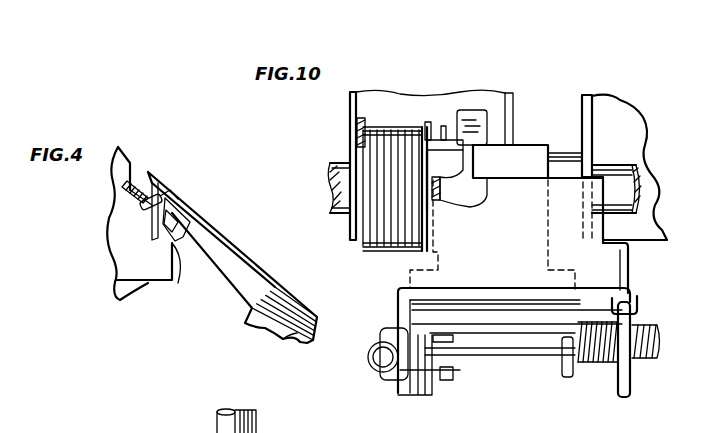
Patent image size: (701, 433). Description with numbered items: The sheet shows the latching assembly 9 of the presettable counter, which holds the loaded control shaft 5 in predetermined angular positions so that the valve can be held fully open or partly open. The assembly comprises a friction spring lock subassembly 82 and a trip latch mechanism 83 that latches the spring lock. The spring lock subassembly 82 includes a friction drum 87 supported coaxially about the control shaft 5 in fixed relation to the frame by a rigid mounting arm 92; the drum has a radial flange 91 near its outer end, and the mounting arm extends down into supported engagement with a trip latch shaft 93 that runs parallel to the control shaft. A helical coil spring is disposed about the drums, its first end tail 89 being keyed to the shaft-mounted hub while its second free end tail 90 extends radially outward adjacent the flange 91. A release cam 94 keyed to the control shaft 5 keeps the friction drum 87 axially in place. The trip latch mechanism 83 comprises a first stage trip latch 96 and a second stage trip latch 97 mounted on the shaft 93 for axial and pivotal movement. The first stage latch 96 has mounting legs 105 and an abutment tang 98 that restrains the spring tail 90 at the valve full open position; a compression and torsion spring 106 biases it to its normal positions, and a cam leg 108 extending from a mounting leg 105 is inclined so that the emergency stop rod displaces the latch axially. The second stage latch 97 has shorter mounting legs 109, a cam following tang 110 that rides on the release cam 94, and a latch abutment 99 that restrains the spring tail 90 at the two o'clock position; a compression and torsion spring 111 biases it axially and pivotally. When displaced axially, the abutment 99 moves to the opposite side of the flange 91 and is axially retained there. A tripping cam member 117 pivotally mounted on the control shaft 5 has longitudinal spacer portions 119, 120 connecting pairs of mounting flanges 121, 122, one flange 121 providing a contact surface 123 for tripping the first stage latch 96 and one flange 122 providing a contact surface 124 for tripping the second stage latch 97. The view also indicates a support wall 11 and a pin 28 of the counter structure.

In FIG. 10, the control shaft 5 is at (630, 190).
In FIG. 10, the latching assembly 9 is at (640, 92).
In FIG. 10, the support wall 11 is at (650, 157).
In FIG. 4, the pin 28 is at (216, 420).
In FIG. 10, the friction spring lock subassembly 82 is at (373, 253).
In FIG. 4, the trip latch mechanism 83 is at (252, 248).
In FIG. 4, the friction drum 87 is at (124, 189).
In FIG. 10, the first end tail 89 is at (360, 146).
In FIG. 4, the second free end tail 90 is at (142, 206).
In FIG. 10, the second free end tail 90 is at (428, 121).
In FIG. 4, the radial flange 91 is at (133, 180).
In FIG. 10, the radial flange 91 is at (444, 125).
In FIG. 10, the mounting arm 92 is at (449, 381).
In FIG. 10, the trip latch shaft 93 is at (658, 333).
In FIG. 10, the release cam 94 is at (478, 112).
In FIG. 4, the first stage trip latch 96 is at (232, 243).
In FIG. 10, the first stage trip latch 96 is at (531, 271).
In FIG. 4, the second stage trip latch 97 is at (236, 291).
In FIG. 10, the second stage trip latch 97 is at (548, 323).
In FIG. 4, the abutment tang 98 is at (147, 172).
In FIG. 10, the abutment tang 98 is at (450, 139).
In FIG. 4, the latch abutment 99 is at (160, 227).
In FIG. 10, the latch abutment 99 is at (480, 176).
In FIG. 4, the mounting legs 105 is at (297, 333).
In FIG. 10, the mounting legs 105 is at (398, 394).
In FIG. 10, the compression and torsion spring 106 is at (638, 322).
In FIG. 10, the cam leg 108 is at (421, 383).
In FIG. 10, the mounting legs 109 is at (396, 374).
In FIG. 10, the cam following tang 110 is at (541, 146).
In FIG. 10, the compression and torsion spring 111 is at (590, 362).
In FIG. 4, the tripping cam member 117 is at (110, 188).
In FIG. 10, the tripping cam member 117 is at (395, 96).
In FIG. 10, the longitudinal spacer portion 119 is at (634, 128).
In FIG. 10, the longitudinal spacer portion 120 is at (378, 97).
In FIG. 4, the mounting flanges 121 is at (178, 216).
In FIG. 10, the mounting flanges 121 is at (587, 139).
In FIG. 10, the mounting flanges 122 is at (350, 98).
In FIG. 4, the contact surface 123 is at (163, 202).
In FIG. 10, the contact surface 123 is at (586, 202).
In FIG. 4, the contact surface 124 is at (180, 275).